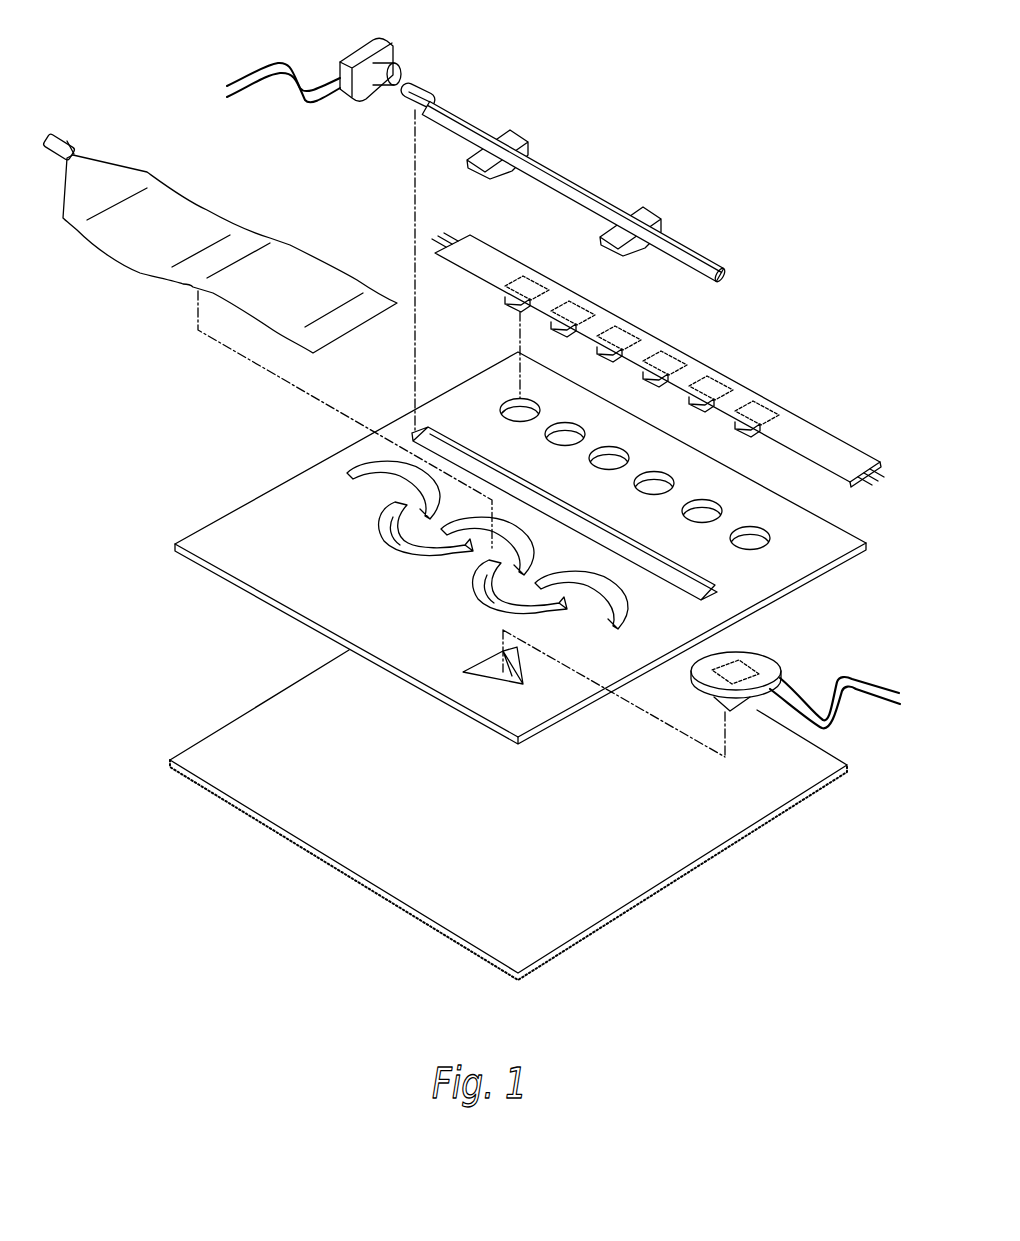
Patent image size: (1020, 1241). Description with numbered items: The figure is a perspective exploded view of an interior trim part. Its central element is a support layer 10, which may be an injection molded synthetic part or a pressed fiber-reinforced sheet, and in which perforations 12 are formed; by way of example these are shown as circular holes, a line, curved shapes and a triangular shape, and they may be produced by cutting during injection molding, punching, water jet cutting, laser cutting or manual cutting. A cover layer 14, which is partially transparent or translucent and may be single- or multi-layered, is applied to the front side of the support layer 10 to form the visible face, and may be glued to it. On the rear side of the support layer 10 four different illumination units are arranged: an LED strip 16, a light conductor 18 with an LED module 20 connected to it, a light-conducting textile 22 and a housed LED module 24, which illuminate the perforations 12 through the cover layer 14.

The support layer 10 is at (242, 507).
The perforations 12 is at (517, 663).
The cover layer 14 is at (288, 688).
The LED strip 16 is at (830, 421).
The light conductor 18 is at (687, 245).
The LED module 20 is at (350, 46).
The light-conducting textile 22 is at (86, 242).
The housed LED module 24 is at (787, 673).